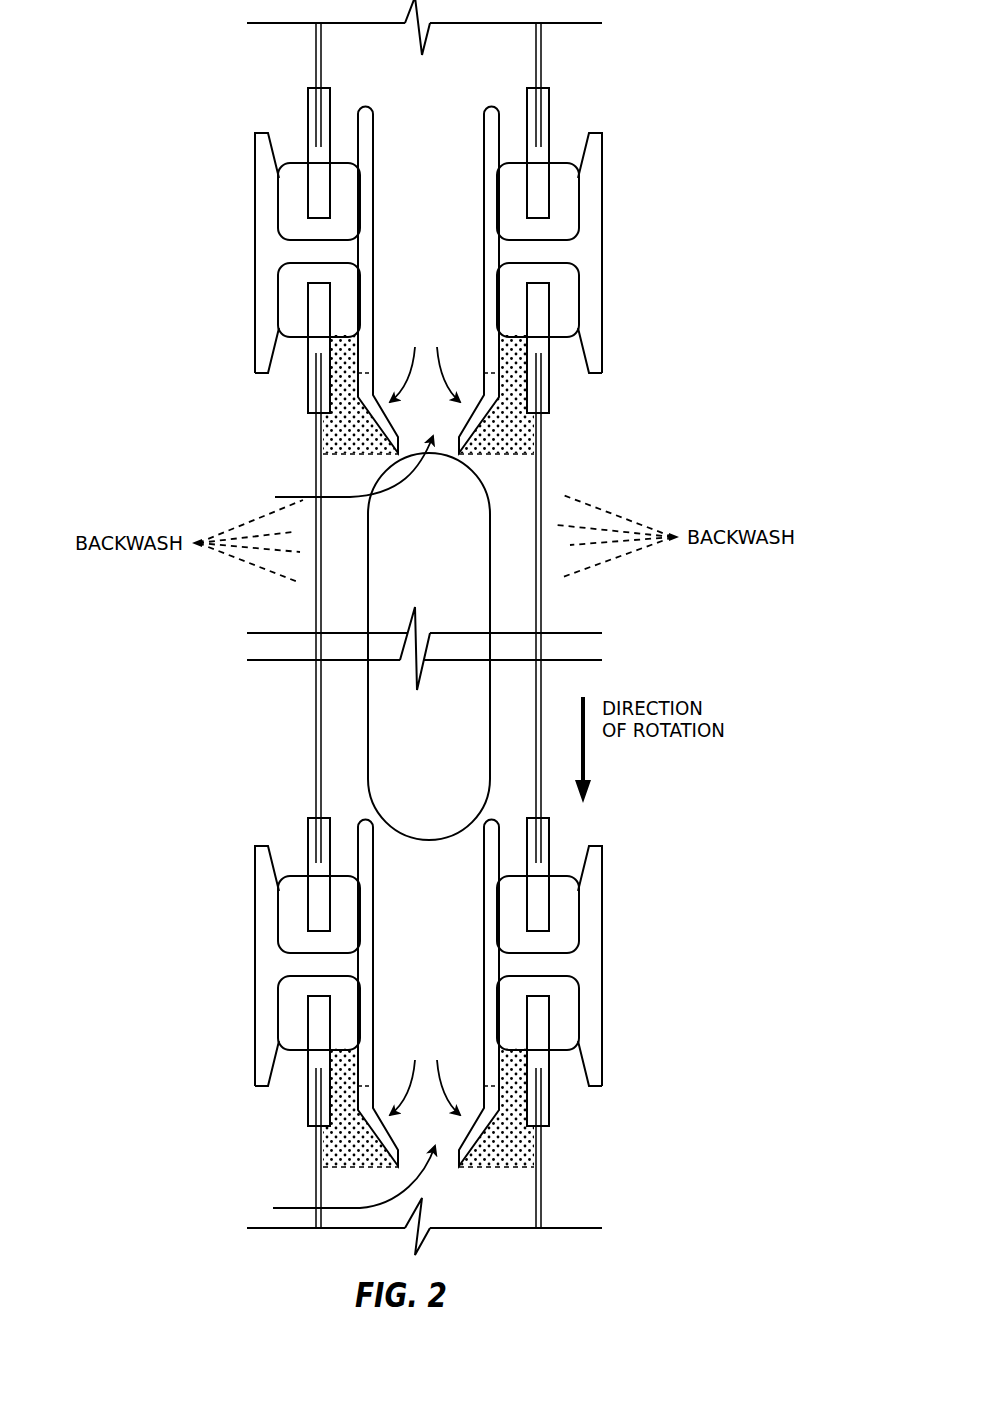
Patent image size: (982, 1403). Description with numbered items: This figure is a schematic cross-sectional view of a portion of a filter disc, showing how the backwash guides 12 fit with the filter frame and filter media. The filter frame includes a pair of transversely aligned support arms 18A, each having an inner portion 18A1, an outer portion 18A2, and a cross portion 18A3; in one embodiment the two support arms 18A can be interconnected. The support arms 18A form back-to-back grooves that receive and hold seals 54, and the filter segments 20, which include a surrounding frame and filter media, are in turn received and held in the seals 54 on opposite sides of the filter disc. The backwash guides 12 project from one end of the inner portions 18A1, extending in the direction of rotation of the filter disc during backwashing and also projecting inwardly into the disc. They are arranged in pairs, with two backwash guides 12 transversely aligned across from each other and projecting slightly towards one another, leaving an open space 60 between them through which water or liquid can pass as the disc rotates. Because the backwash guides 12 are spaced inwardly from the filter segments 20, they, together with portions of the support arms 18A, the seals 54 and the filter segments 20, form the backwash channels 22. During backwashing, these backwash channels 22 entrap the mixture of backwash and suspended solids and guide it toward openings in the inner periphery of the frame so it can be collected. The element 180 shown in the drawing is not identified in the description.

The backwash guide 12 is at (425, 716).
The support arm 18A is at (602, 245).
The inner portion 18A1 is at (373, 205).
The outer portion 18A2 is at (255, 245).
The cross portion 18A3 is at (312, 250).
The filter segment 20 is at (316, 593).
The backwash channel 22 is at (343, 437).
The seal 54 is at (296, 185).
The open space 60 is at (339, 828).
The cleaning member 180 is at (490, 547).